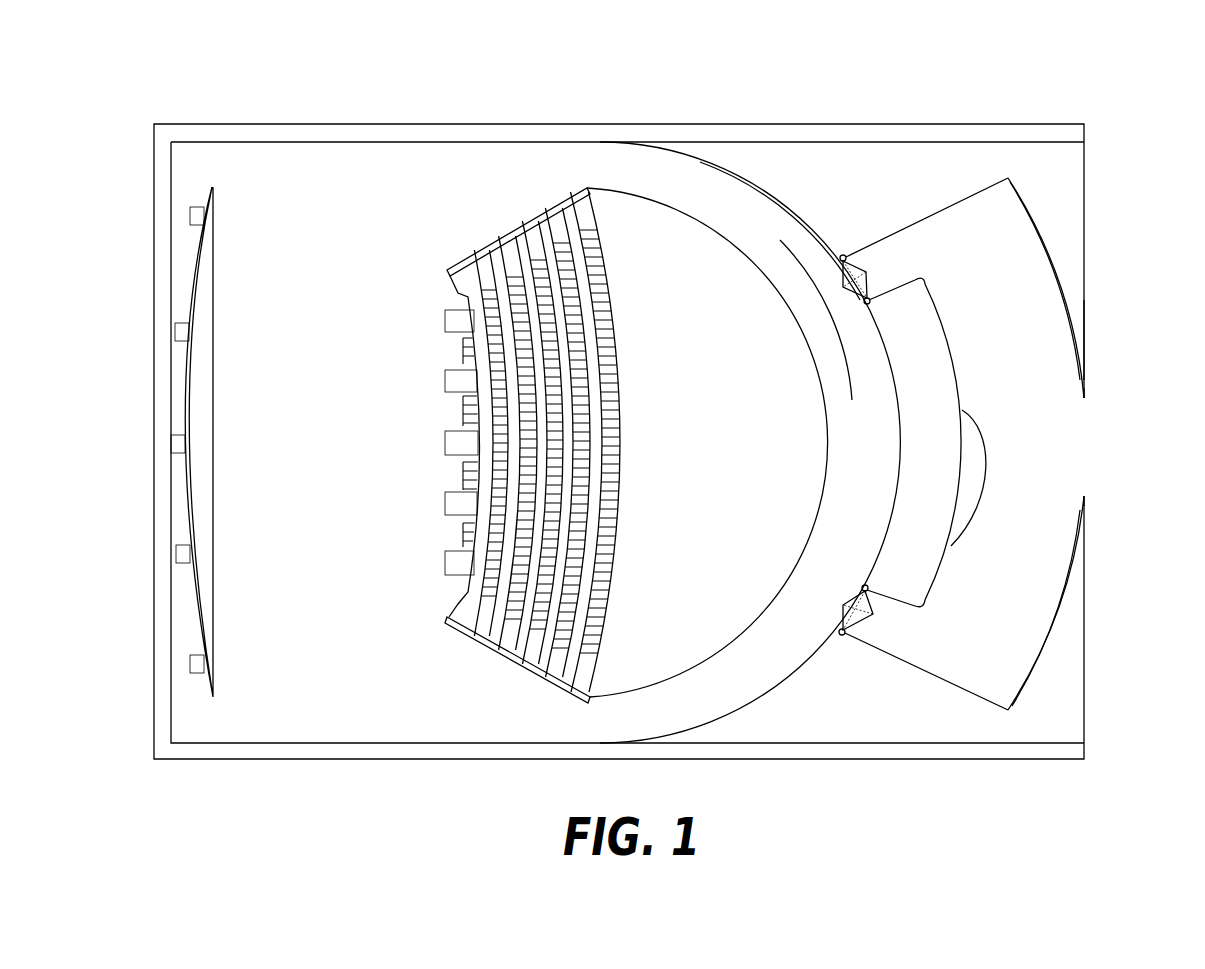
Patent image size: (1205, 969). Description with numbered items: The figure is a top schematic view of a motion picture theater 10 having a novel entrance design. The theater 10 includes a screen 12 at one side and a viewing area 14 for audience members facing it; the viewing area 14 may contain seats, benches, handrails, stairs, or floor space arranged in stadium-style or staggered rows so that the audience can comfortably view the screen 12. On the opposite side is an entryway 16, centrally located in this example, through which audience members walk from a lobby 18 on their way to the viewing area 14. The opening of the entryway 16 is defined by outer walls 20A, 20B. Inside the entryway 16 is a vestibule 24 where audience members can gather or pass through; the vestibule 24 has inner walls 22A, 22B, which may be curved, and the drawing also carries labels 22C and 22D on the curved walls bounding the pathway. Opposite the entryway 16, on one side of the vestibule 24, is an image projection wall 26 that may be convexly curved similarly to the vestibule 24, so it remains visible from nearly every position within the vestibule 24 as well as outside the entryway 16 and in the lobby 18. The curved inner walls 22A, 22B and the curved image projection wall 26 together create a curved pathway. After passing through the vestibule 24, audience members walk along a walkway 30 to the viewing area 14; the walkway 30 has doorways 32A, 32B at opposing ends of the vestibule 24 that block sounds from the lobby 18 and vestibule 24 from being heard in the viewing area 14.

The motion picture theater 10 is at (458, 71).
The screen 12 is at (188, 408).
The viewing area 14 is at (448, 414).
The entryway 16 is at (1098, 460).
The lobby 18 is at (1143, 382).
The outer wall 20A is at (1084, 642).
The outer wall 20B is at (1084, 322).
The inner wall 22A is at (1045, 640).
The inner wall 22B is at (1040, 237).
The ring edge 22C is at (800, 217).
The ring edge 22D is at (839, 340).
The vestibule 24 is at (1051, 457).
The image projection wall 26 is at (951, 546).
The walkway 30 is at (737, 202).
The doorway 32A is at (870, 624).
The doorway 32B is at (866, 274).